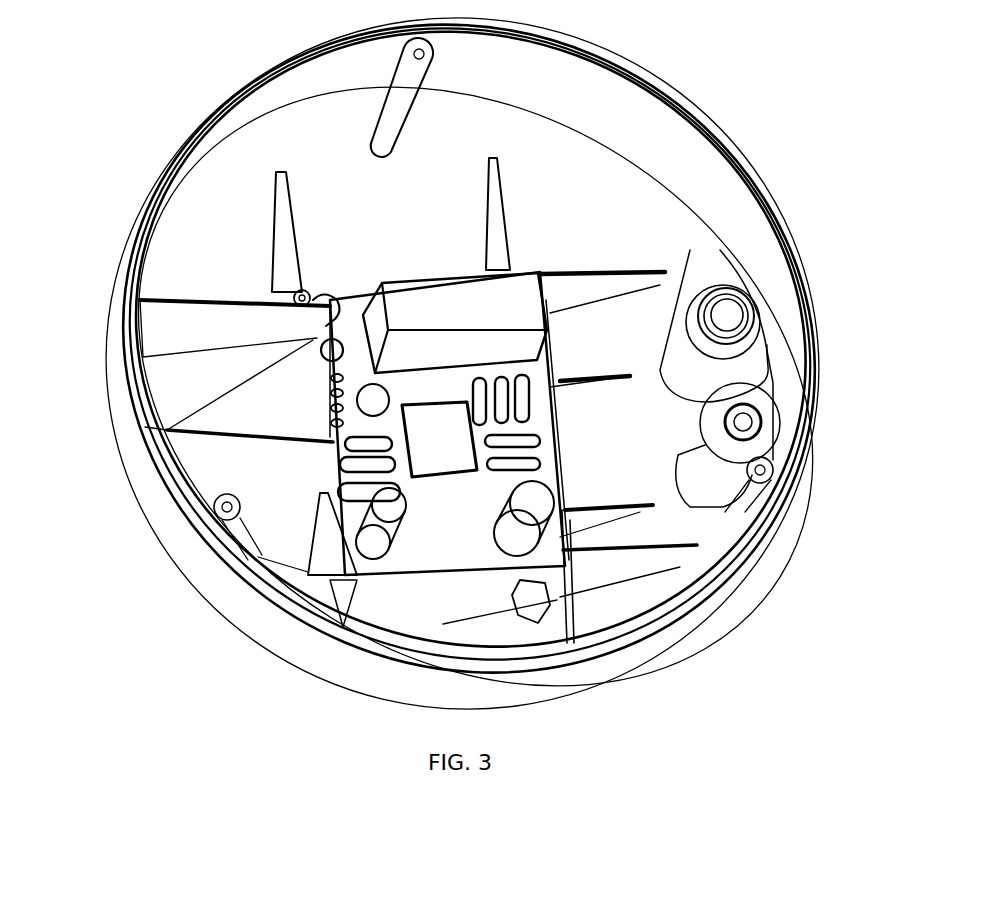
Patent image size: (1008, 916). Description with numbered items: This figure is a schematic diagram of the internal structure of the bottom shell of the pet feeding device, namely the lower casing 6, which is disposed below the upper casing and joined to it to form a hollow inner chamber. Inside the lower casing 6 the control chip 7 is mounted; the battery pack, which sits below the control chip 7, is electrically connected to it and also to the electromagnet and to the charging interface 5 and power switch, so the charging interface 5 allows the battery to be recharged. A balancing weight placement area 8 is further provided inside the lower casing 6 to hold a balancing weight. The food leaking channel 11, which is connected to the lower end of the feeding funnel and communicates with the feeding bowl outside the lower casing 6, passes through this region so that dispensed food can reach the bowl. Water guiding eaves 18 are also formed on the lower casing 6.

The charging interface 5 is at (757, 432).
The lower casing 6 is at (697, 622).
The control chip 7 is at (422, 427).
The balancing weight placement area 8 is at (597, 613).
The food leaking channel 11 is at (268, 415).
The water guiding eaves 18 is at (735, 305).